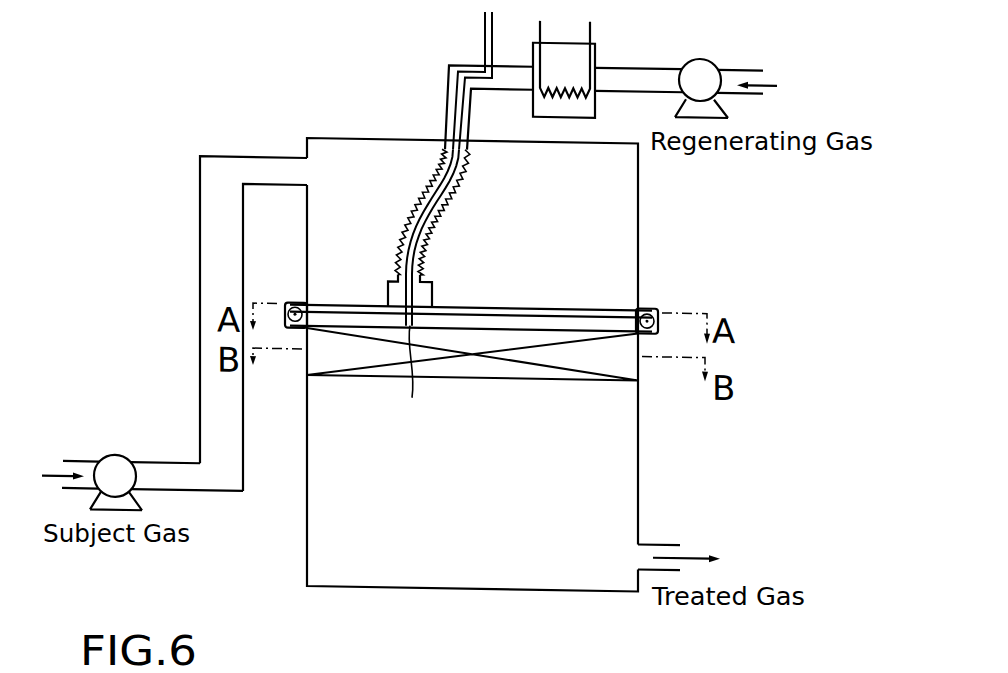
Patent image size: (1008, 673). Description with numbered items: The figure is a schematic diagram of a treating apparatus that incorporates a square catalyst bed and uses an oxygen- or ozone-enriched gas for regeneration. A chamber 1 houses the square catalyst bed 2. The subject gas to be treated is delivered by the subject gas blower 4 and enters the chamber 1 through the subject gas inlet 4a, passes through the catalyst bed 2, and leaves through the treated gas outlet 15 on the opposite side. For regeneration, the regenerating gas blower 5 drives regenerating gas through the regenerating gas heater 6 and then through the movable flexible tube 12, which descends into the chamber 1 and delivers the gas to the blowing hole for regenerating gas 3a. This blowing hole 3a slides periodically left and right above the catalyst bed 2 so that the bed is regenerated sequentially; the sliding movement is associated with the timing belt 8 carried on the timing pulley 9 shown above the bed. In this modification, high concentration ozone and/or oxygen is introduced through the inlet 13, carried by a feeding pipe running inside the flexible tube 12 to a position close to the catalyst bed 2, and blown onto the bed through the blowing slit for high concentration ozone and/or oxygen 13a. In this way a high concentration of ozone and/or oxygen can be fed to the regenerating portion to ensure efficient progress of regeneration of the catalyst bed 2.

The chamber 1 is at (622, 245).
The catalyst bed 2 is at (593, 352).
The blowing hole for regenerating gas 3a is at (395, 315).
The subject gas blower 4 is at (118, 460).
The subject gas inlet 4a is at (305, 157).
The regenerating gas blower 5 is at (701, 52).
The regenerating gas heater 6 is at (596, 49).
The timing belt 8 is at (612, 305).
The timing pulley 9 is at (286, 302).
The flexible tube 12 is at (432, 184).
The inlet of high concentration ozone and/or oxygen 13 is at (485, 31).
The blowing slit for high concentration ozone and/or oxygen 13a is at (404, 383).
The treated gas outlet 15 is at (640, 537).